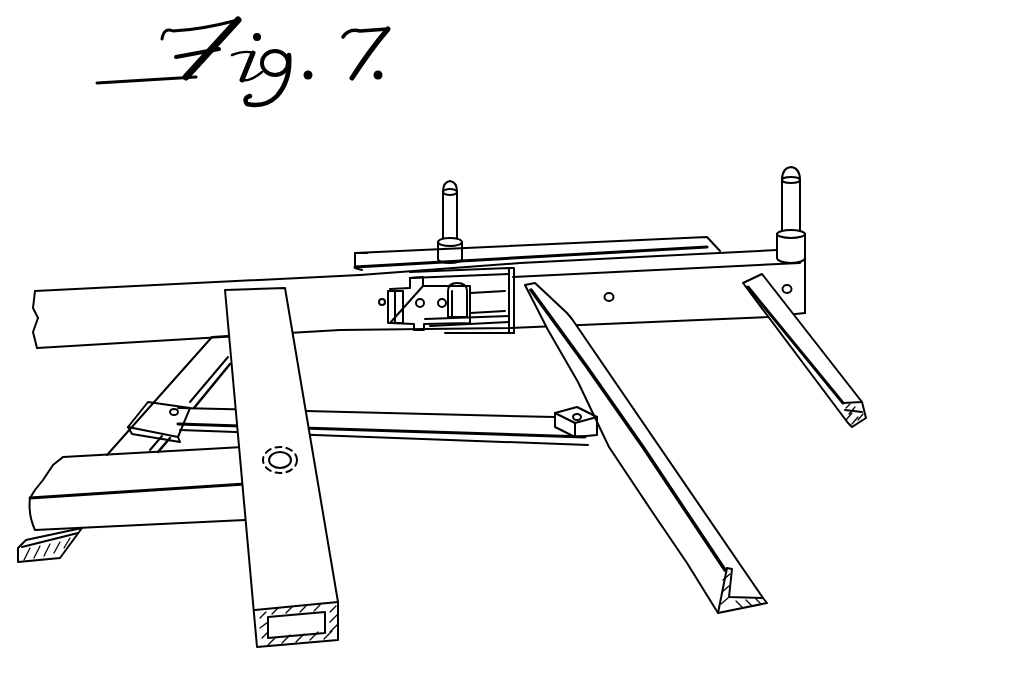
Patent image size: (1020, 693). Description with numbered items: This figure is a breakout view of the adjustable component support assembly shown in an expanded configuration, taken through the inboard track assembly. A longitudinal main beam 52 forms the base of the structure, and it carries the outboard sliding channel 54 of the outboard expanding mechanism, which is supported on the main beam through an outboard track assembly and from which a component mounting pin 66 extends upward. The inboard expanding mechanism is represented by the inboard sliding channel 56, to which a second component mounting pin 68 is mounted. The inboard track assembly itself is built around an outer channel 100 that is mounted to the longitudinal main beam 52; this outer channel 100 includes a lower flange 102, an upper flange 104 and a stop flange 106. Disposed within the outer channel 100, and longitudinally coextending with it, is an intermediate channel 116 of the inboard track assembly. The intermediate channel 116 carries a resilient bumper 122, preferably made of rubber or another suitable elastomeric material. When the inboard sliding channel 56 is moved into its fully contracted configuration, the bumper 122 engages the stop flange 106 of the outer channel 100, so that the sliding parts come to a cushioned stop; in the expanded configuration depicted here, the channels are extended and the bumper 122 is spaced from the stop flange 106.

The longitudinal main beam 52 is at (287, 274).
The outboard sliding channel 54 is at (678, 198).
The inboard sliding channel 56 is at (857, 301).
The component mounting pin 66 is at (778, 192).
The component mounting pin 68 is at (522, 133).
The outer channel 100 is at (424, 299).
The lower flange 102 is at (432, 325).
The upper flange 104 is at (432, 285).
The stop flange 106 is at (392, 313).
The intermediate channel 116 is at (491, 303).
The resilient bumper 122 is at (463, 314).